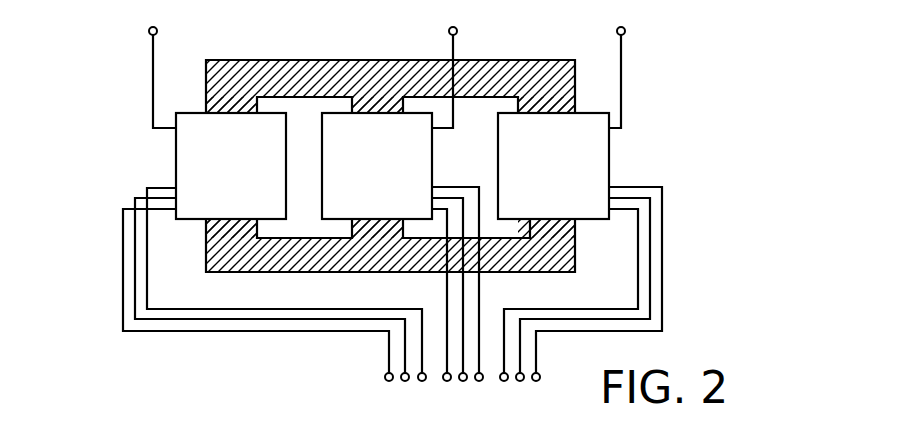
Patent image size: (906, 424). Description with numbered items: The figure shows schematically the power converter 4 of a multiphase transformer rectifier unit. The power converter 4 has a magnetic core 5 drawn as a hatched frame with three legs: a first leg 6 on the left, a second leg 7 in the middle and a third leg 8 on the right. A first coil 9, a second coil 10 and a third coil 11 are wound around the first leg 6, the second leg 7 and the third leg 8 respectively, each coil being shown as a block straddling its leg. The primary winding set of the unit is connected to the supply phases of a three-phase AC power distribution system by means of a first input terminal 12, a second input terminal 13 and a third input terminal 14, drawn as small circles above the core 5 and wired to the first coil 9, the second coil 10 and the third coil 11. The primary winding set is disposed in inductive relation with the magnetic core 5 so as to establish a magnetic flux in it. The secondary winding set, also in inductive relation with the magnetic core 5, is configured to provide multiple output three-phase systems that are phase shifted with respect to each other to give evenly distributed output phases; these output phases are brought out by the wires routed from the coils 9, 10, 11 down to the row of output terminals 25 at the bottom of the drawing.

The power converter 4 is at (698, 71).
The magnetic core 5 is at (507, 67).
The first leg 6 is at (220, 110).
The second leg 7 is at (357, 112).
The third leg 8 is at (563, 112).
The first coil 9 is at (221, 178).
The second coil 10 is at (364, 178).
The third coil 11 is at (568, 178).
The first input terminal 12 is at (149, 28).
The second input terminal 13 is at (449, 29).
The third input terminal 14 is at (626, 30).
The output terminals 25 is at (462, 392).